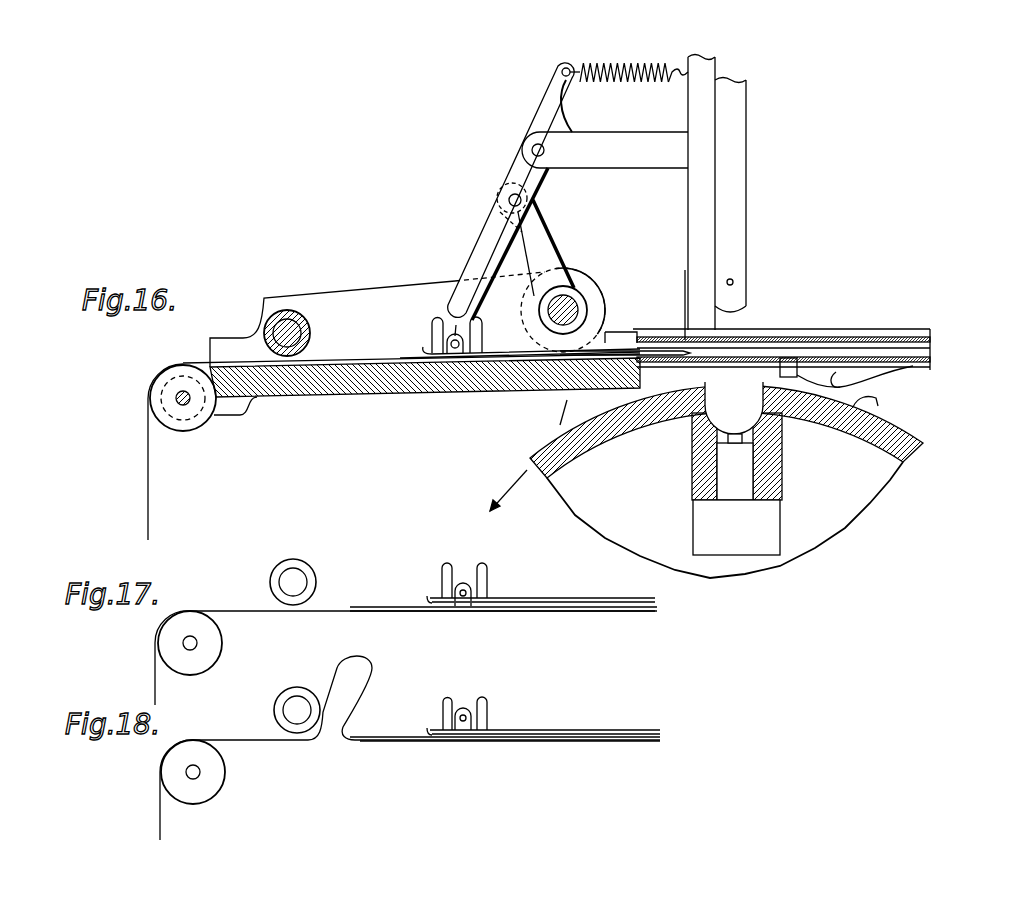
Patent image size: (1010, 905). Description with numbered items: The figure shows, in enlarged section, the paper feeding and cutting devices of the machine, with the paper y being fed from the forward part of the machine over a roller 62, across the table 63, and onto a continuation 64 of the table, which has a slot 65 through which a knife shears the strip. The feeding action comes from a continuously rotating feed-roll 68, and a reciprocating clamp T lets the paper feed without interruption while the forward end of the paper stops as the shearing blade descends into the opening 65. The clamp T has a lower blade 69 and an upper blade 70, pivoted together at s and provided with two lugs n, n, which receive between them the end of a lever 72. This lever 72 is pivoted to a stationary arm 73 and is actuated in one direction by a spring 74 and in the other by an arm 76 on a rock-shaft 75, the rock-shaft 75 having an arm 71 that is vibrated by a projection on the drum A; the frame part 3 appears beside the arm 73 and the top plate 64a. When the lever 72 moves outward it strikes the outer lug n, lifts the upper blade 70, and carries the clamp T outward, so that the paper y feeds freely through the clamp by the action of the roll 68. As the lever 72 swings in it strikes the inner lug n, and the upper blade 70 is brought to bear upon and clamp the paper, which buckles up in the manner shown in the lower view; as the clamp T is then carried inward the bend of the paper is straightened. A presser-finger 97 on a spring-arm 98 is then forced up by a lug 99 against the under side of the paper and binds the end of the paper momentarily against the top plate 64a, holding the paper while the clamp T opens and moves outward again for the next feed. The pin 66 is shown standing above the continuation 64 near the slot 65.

In FIG. 16, the frame bar 3 is at (730, 193).
In FIG. 16, the roller 62 is at (194, 422).
In FIG. 17, the roller 62 is at (225, 636).
In FIG. 18, the roller 62 is at (216, 789).
In FIG. 16, the table 63 is at (347, 385).
In FIG. 16, the continuation of the table 64 is at (932, 358).
In FIG. 16, the top plate 64a is at (930, 333).
In FIG. 16, the slot 65 is at (687, 365).
In FIG. 16, the pin 66 is at (683, 311).
In FIG. 16, the feed-roll 68 is at (270, 320).
In FIG. 17, the feed-roll 68 is at (293, 561).
In FIG. 18, the feed-roll 68 is at (298, 682).
In FIG. 16, the lower blade 69 is at (355, 362).
In FIG. 17, the lower blade 69 is at (552, 612).
In FIG. 18, the lower blade 69 is at (556, 742).
In FIG. 16, the upper blade 70 is at (501, 353).
In FIG. 17, the upper blade 70 is at (533, 597).
In FIG. 18, the upper blade 70 is at (550, 729).
In FIG. 16, the arm 71 is at (567, 396).
In FIG. 16, the lever 72 is at (482, 243).
In FIG. 16, the stationary arm 73 is at (605, 150).
In FIG. 16, the spring 74 is at (625, 85).
In FIG. 16, the rock-shaft 75 is at (584, 306).
In FIG. 16, the arm 76 is at (553, 250).
In FIG. 16, the presser-finger 97 is at (790, 358).
In FIG. 16, the spring-arm 98 is at (889, 373).
In FIG. 16, the lug 99 is at (883, 407).
In FIG. 16, the drum A is at (923, 446).
In FIG. 16, the clamp T is at (408, 356).
In FIG. 17, the clamp T is at (428, 602).
In FIG. 18, the clamp T is at (412, 731).
In FIG. 16, the lugs n is at (442, 313).
In FIG. 17, the lugs n is at (451, 566).
In FIG. 18, the lugs n is at (441, 704).
In FIG. 16, the pivot s is at (446, 337).
In FIG. 17, the pivot s is at (461, 600).
In FIG. 18, the pivot s is at (464, 708).
In FIG. 16, the paper y is at (142, 460).
In FIG. 18, the paper y is at (156, 826).